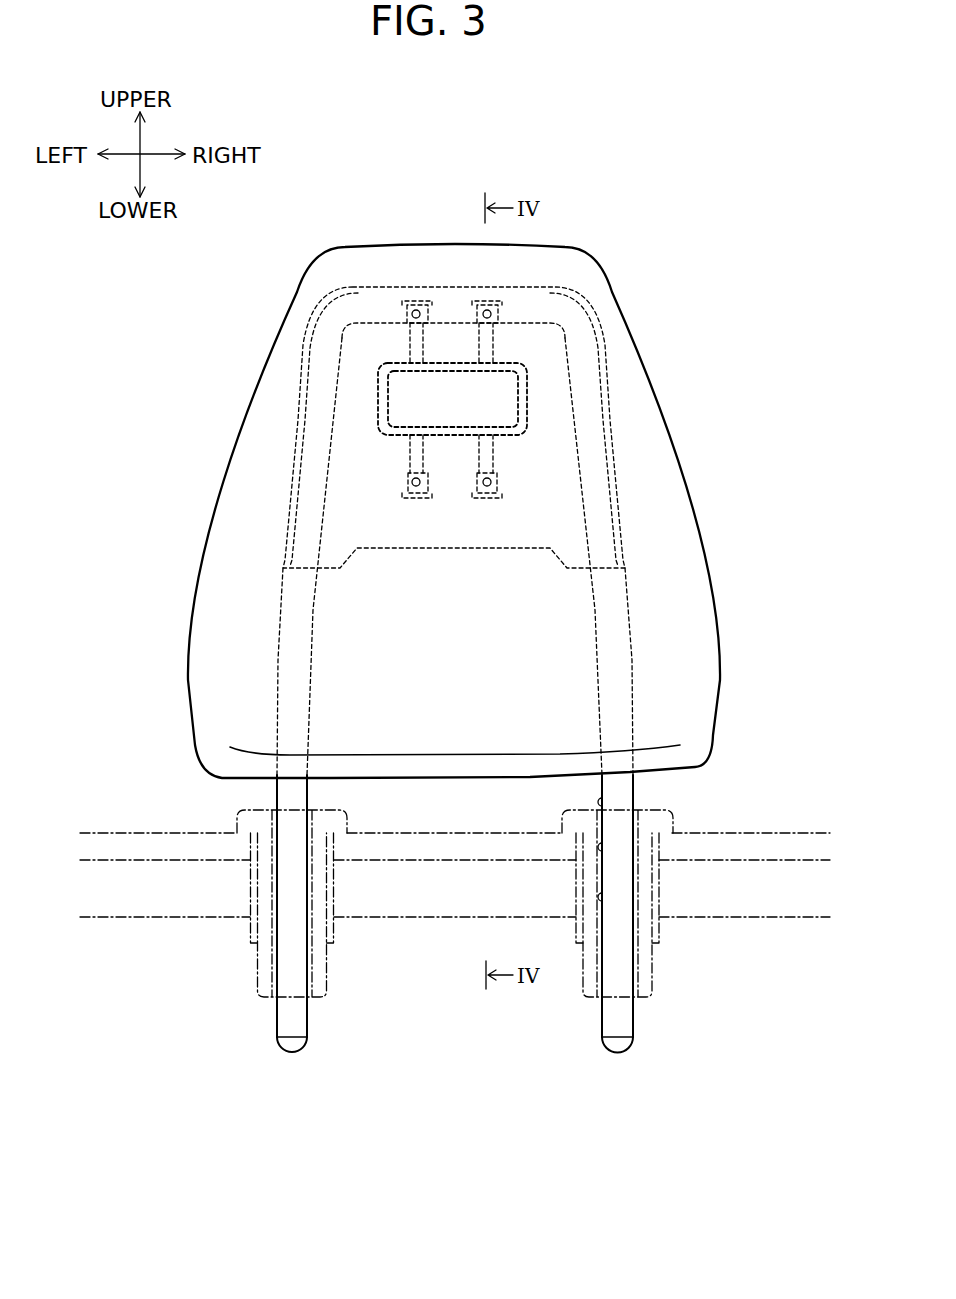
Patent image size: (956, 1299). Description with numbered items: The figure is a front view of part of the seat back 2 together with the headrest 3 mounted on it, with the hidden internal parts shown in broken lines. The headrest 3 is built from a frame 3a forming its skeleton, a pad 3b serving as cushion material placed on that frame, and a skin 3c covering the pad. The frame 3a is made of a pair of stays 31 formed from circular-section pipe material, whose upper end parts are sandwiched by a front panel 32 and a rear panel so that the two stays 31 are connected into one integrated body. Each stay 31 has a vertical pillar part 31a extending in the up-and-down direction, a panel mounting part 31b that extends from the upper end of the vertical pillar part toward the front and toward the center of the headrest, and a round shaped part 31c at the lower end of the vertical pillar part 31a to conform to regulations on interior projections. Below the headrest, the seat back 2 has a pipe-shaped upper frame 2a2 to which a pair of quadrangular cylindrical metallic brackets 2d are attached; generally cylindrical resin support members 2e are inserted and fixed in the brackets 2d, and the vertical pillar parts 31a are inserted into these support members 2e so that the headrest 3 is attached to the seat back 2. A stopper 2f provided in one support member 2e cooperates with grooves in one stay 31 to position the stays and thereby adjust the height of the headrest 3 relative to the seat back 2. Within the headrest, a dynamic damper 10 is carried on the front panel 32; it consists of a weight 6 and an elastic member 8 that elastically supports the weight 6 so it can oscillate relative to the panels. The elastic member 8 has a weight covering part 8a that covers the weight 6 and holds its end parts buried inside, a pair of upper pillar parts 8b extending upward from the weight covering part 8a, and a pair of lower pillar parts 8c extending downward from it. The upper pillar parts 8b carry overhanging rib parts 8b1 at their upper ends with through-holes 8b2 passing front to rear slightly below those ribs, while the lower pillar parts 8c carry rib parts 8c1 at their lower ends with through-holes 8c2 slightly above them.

The seat back 2 is at (455, 901).
The upper frame 2a2 is at (186, 912).
The bracket 2d is at (330, 927).
The support member 2e is at (320, 977).
The stopper 2f is at (590, 853).
The headrest 3 is at (277, 312).
The frame 3a is at (604, 361).
The pad 3b is at (245, 525).
The skin 3c is at (203, 568).
The weight 6 is at (495, 400).
The elastic member 8 is at (158, 352).
The weight covering part 8a is at (378, 400).
The upper pillar part 8b is at (330, 274).
The rib part 8b1 is at (400, 303).
The through-hole 8b2 is at (484, 300).
The lower pillar part 8c is at (459, 521).
The rib part 8c1 is at (498, 494).
The through-hole 8c2 is at (486, 498).
The dynamic damper 10 is at (530, 362).
The stay 31 is at (450, 724).
The vertical pillar part 31a is at (277, 795).
The panel mounting part 31b is at (290, 628).
The round shaped part 31c is at (292, 1052).
The front panel 32 is at (592, 440).